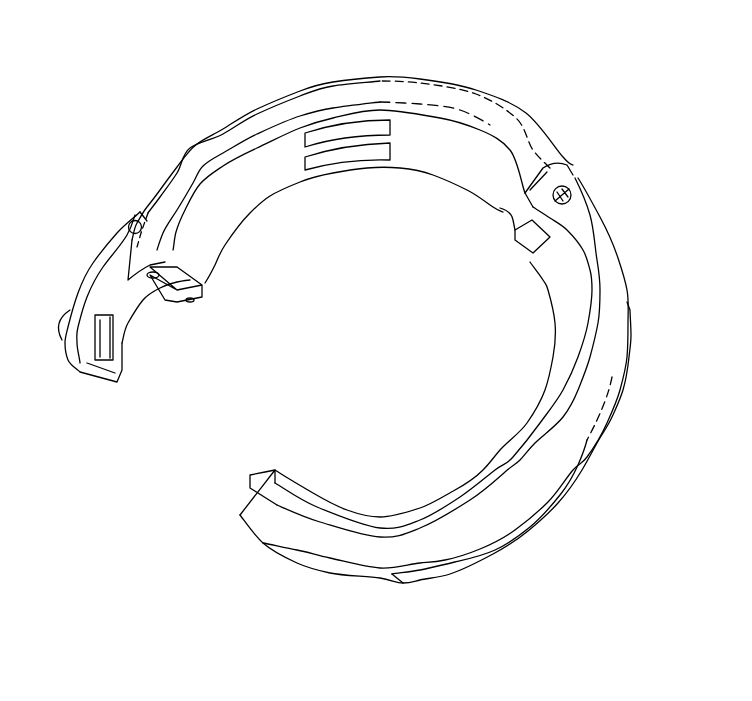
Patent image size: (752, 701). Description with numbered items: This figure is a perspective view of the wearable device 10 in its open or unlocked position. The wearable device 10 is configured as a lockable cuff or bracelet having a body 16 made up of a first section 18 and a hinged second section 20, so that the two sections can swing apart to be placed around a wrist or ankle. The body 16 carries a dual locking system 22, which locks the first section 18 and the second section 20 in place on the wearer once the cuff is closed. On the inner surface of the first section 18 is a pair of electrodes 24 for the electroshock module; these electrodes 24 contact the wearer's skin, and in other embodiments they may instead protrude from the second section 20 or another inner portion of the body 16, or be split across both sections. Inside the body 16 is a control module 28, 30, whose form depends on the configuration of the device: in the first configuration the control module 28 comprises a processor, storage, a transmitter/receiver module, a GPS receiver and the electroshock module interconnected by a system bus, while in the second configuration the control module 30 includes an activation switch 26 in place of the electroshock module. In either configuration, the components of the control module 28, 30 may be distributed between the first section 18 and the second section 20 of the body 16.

The wearable device 10 is at (528, 88).
The body 16 is at (197, 138).
The first section 18 is at (411, 76).
The hinged second section 20 is at (260, 544).
The dual locking system 22 is at (73, 290).
The pair of electrodes 24 is at (305, 165).
The activation switch 26 is at (614, 415).
The control module 28 is at (596, 238).
The control module 30 is at (562, 195).